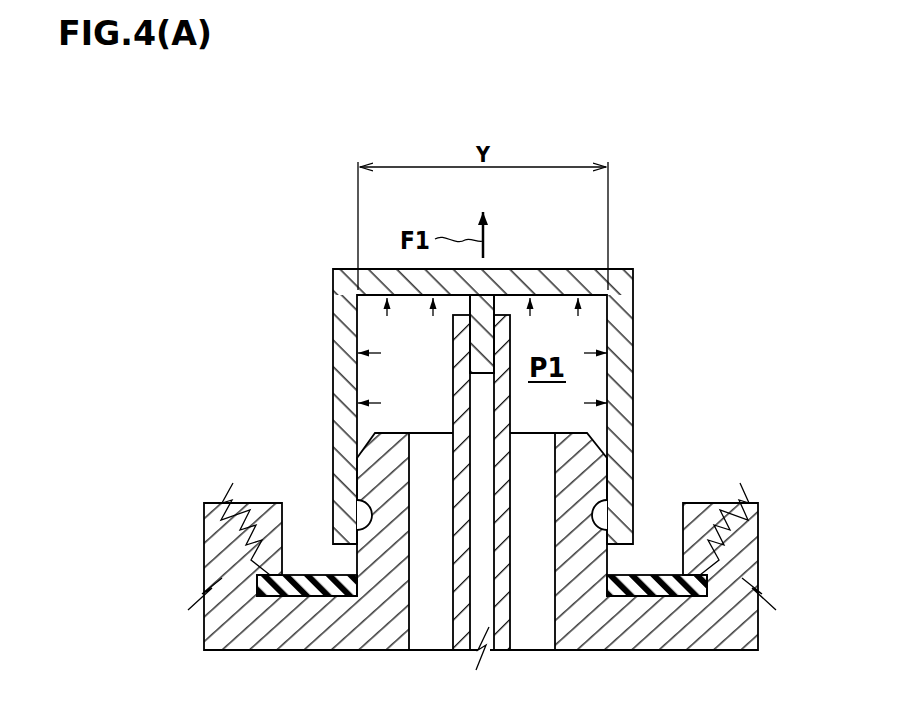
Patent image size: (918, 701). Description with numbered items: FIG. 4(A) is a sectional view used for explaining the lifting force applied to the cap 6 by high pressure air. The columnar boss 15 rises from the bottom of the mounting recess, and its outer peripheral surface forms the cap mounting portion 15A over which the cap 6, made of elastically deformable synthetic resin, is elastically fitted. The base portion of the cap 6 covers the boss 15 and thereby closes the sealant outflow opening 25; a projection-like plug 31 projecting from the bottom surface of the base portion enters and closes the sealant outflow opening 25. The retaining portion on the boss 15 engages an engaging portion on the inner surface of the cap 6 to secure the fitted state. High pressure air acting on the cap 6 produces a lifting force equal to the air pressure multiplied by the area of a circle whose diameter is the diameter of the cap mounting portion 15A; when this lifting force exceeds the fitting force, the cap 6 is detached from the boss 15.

The cap 6 is at (633, 430).
The boss 15 is at (583, 472).
The cap mounting portion 15A is at (605, 500).
The sealant outflow opening 25 is at (485, 315).
The plug 31 is at (485, 343).